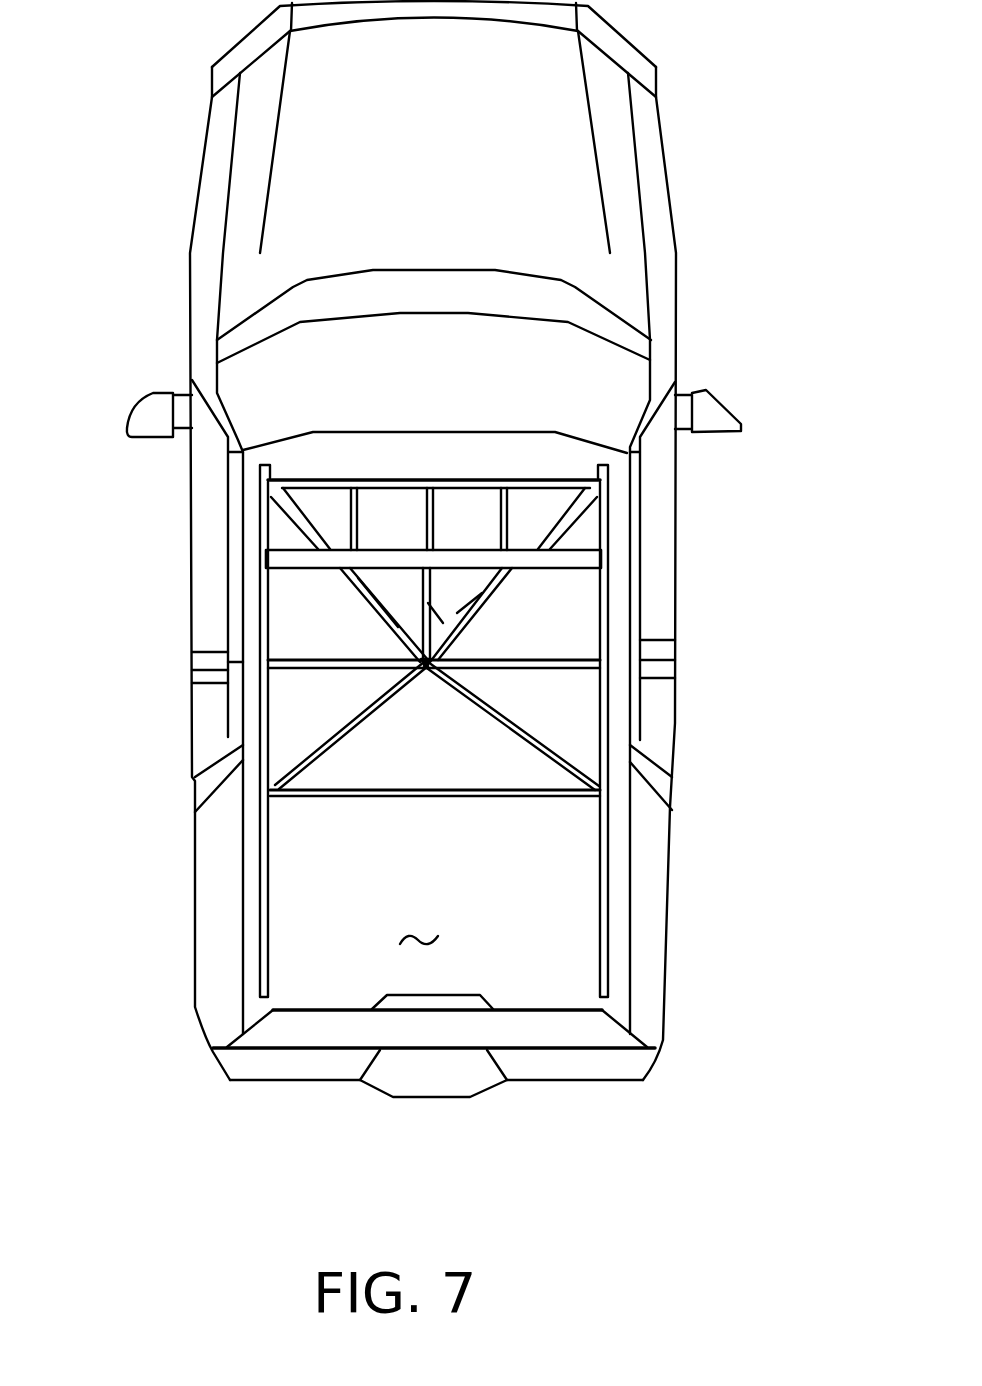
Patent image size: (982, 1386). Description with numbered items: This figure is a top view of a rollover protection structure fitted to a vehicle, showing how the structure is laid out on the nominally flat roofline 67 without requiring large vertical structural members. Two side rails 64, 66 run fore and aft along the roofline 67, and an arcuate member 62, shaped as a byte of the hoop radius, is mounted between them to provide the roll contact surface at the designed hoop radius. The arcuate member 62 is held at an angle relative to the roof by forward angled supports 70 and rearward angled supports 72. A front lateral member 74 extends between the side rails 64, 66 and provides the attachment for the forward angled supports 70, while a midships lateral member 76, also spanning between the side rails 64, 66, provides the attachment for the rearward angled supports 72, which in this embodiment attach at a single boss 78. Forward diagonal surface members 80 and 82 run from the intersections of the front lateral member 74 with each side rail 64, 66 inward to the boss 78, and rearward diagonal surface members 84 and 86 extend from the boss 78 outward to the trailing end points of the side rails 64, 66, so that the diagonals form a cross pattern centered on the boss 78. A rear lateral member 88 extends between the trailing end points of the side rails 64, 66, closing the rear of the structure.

The arcuate member 62 is at (577, 559).
The side rail 64 is at (260, 580).
The side rail 66 is at (606, 750).
The roofline 67 is at (419, 923).
The forward angled supports 70 is at (495, 522).
The rearward angled supports 72 is at (440, 655).
The front lateral member 74 is at (477, 482).
The midships lateral member 76 is at (537, 669).
The boss 78 is at (413, 667).
The forward diagonal surface member 80 is at (354, 584).
The forward diagonal surface member 82 is at (570, 520).
The rearward diagonal surface member 84 is at (313, 740).
The rearward diagonal surface member 86 is at (510, 737).
The rear lateral member 88 is at (377, 792).